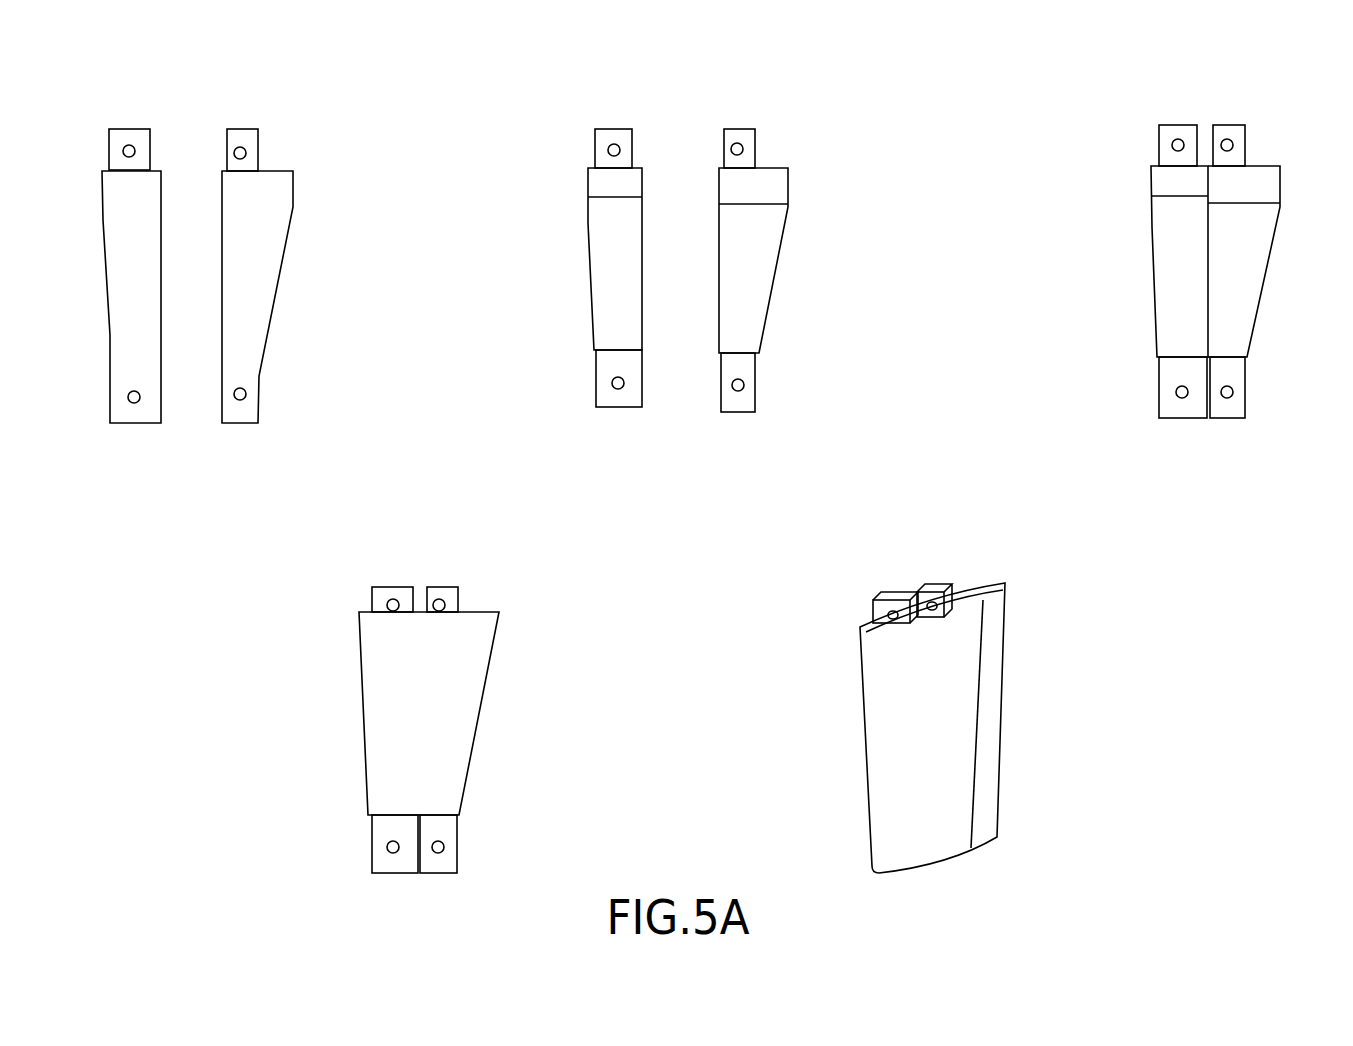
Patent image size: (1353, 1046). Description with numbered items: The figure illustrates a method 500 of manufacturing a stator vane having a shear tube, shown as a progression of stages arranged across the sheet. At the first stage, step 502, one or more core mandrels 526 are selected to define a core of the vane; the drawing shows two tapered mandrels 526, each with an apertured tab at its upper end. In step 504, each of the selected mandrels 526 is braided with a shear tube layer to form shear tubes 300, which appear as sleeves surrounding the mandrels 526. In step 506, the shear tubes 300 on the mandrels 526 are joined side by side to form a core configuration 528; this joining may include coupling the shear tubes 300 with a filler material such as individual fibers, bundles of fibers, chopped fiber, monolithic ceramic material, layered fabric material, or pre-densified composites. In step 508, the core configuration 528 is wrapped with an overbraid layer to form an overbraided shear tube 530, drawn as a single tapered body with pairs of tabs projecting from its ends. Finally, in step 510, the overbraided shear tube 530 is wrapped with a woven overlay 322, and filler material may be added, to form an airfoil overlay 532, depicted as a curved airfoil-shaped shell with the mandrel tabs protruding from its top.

The method 500 is at (907, 114).
The step of selecting core mandrels 502 is at (312, 124).
The step of braiding mandrels with shear tube layer 504 is at (718, 241).
The step of joining shear tubes 506 is at (1251, 239).
The step of wrapping core configuration with overbraid layer 508 is at (481, 697).
The step of wrapping with woven overlay 510 is at (998, 690).
The core mandrel 526 is at (118, 141).
The core configuration 528 is at (1291, 158).
The overbraided shear tube 530 is at (482, 642).
The airfoil overlay 532 is at (1024, 747).
The shear tube 300 is at (644, 183).
The woven overlay 322 is at (997, 678).